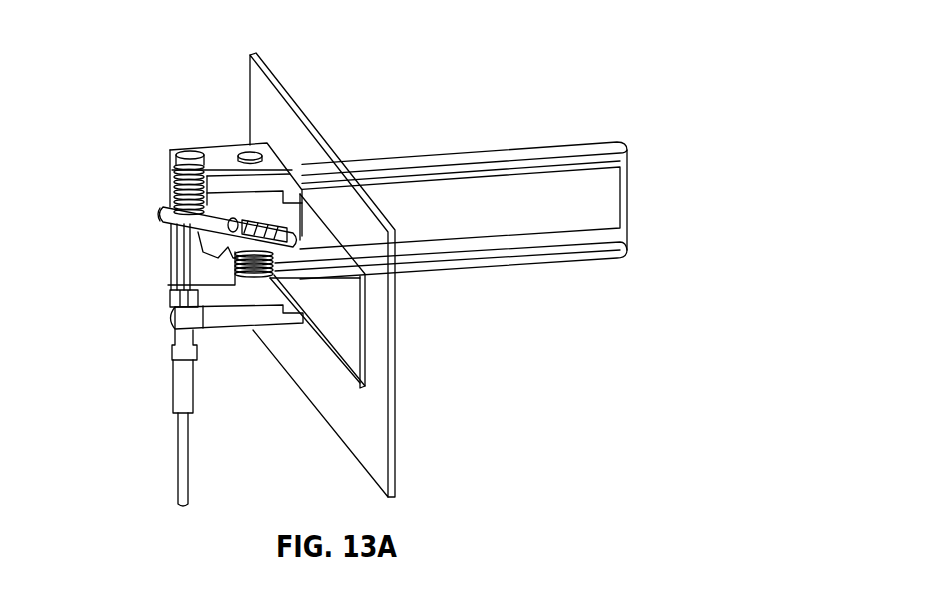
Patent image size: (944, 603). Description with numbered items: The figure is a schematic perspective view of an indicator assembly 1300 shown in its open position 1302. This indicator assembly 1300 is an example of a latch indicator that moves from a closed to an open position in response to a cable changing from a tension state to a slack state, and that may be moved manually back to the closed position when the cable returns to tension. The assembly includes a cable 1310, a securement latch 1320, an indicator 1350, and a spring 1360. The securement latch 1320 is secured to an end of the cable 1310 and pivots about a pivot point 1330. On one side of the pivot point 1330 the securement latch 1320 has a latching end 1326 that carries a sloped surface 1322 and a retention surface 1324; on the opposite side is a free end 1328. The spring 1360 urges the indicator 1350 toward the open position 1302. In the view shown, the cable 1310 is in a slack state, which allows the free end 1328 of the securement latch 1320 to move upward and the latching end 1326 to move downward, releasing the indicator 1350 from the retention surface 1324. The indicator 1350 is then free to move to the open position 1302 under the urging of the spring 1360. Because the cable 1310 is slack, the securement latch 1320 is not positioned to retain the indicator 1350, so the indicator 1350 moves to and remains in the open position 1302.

The indicator assembly 1300 is at (275, 254).
The open position 1302 is at (491, 273).
The cable 1310 is at (192, 488).
The securement latch 1320 is at (162, 217).
The sloped surface 1322 is at (300, 247).
The retention surface 1324 is at (273, 220).
The latching end 1326 is at (313, 252).
The free end 1328 is at (157, 197).
The pivot point 1330 is at (233, 218).
The indicator 1350 is at (627, 203).
The spring 1360 is at (262, 270).